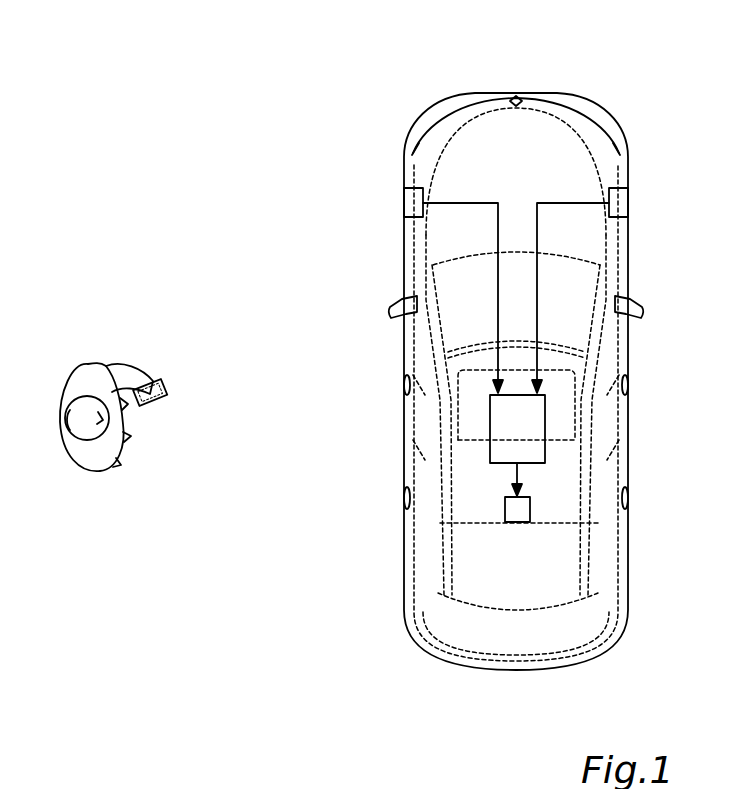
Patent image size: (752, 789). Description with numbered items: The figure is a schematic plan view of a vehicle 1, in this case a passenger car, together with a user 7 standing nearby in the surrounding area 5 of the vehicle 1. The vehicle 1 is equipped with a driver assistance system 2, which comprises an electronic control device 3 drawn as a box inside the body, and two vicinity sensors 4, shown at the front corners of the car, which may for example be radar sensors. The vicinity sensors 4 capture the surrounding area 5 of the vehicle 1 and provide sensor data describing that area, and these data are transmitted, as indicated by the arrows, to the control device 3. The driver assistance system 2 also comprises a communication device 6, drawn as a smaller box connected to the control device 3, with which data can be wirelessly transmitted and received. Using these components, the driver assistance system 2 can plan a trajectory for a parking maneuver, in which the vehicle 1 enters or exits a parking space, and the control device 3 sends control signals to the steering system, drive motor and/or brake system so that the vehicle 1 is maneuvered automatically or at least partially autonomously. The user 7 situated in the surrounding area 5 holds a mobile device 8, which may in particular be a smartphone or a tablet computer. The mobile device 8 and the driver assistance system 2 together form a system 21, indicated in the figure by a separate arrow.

The vehicle 1 is at (558, 93).
The driver assistance system 2 is at (409, 96).
The electronic control device 3 is at (545, 433).
The vicinity sensor 4 is at (410, 203).
The surrounding area 5 is at (526, 69).
The communication device 6 is at (530, 511).
The user 7 is at (86, 368).
The mobile device 8 is at (168, 392).
The system 21 is at (186, 108).